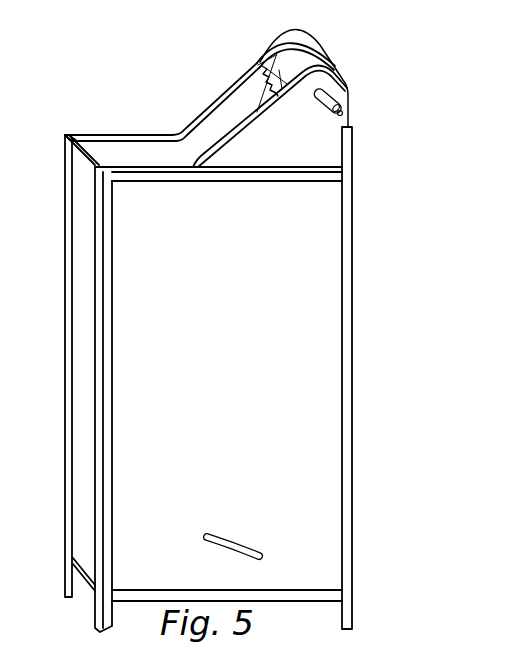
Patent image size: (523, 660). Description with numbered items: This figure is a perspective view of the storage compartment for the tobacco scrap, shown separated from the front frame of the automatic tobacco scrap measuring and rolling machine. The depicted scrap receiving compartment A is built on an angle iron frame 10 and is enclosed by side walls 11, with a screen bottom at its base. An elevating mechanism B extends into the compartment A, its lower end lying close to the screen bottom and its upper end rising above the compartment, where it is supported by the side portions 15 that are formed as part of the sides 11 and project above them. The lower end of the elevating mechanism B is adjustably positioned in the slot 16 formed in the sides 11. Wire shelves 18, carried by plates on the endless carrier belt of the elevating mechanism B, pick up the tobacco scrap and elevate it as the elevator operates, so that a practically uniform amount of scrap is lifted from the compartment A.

The angle iron frame 10 is at (102, 452).
The side walls 11 is at (150, 147).
The side portions 15 is at (228, 103).
The slot 16 is at (233, 547).
The wire shelves 18 is at (258, 63).
The scrap receiving compartment A is at (90, 138).
The elevating mechanism B is at (307, 53).